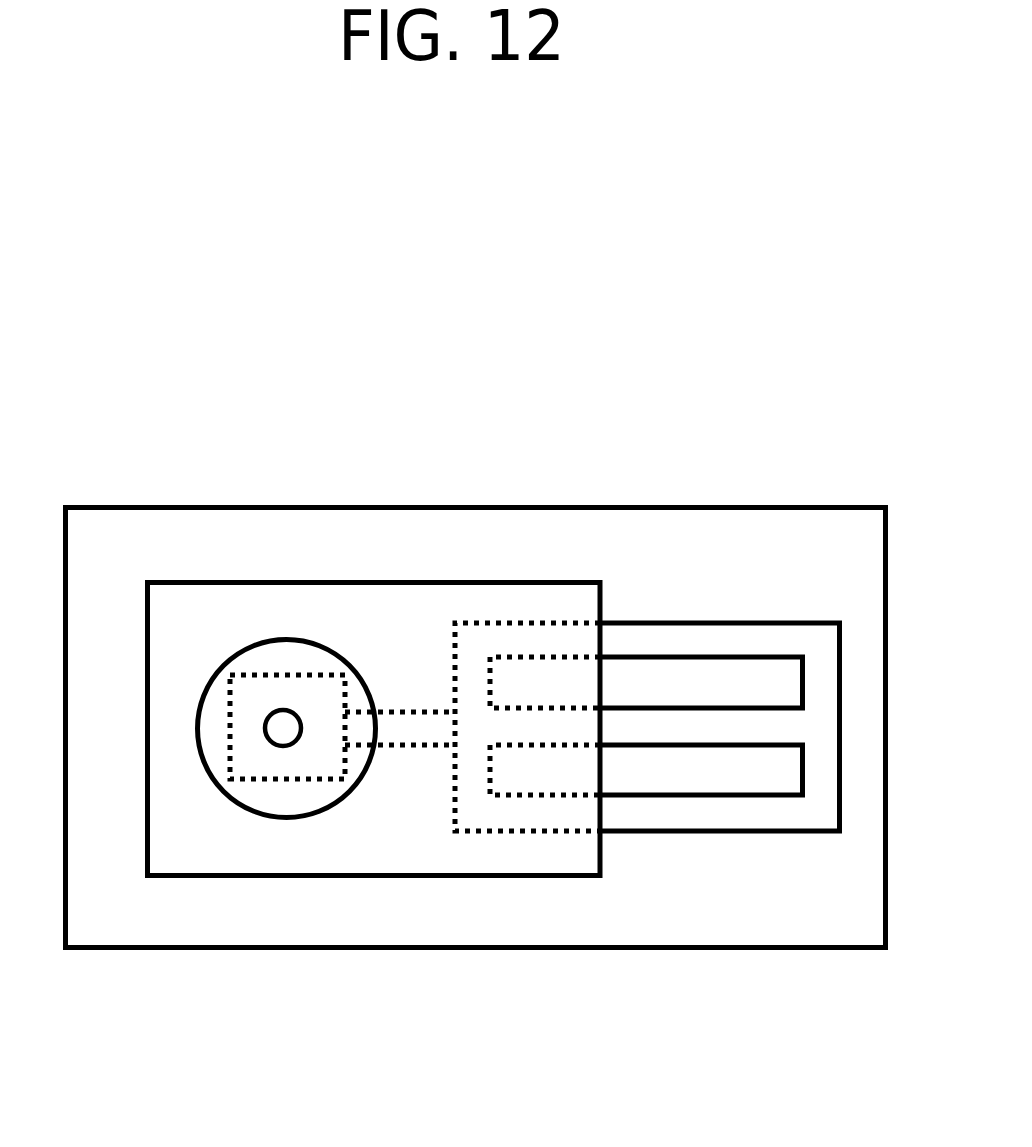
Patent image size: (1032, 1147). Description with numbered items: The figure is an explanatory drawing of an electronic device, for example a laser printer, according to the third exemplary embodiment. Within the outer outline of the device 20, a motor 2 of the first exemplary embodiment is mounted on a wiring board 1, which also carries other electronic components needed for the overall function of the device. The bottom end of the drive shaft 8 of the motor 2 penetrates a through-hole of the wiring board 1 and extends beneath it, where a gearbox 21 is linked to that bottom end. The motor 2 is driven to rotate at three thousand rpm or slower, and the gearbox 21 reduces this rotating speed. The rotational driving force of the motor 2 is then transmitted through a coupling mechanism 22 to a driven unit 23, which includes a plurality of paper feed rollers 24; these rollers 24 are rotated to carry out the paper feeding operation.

The substrate / mounting board 20 is at (135, 530).
The wiring board 1 is at (238, 602).
The motor 2 is at (317, 657).
The drive shaft 8 is at (283, 727).
The gearbox 21 is at (310, 770).
The coupling mechanism 22 is at (405, 732).
The driven unit 23 is at (633, 618).
The paper feed rollers 24 is at (763, 683).